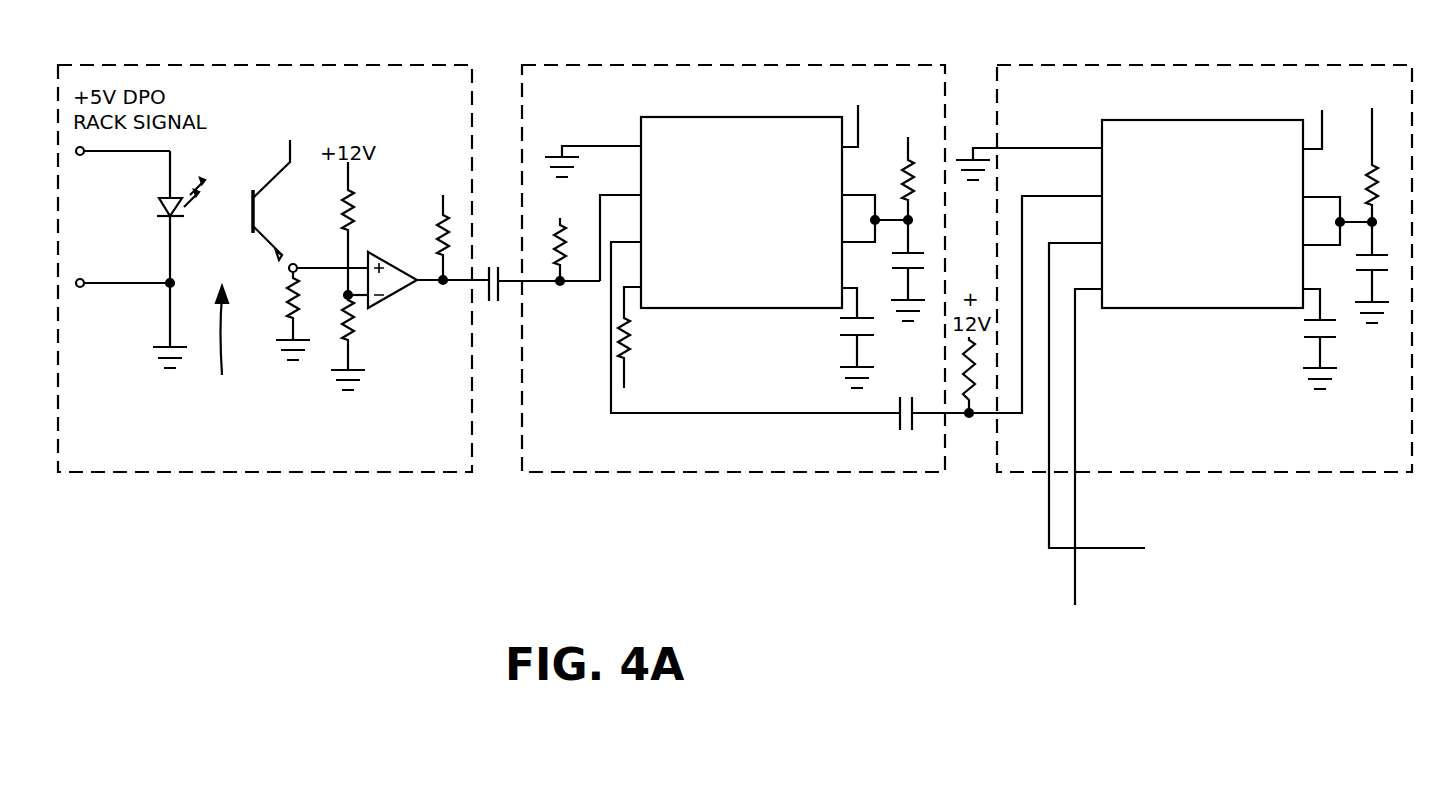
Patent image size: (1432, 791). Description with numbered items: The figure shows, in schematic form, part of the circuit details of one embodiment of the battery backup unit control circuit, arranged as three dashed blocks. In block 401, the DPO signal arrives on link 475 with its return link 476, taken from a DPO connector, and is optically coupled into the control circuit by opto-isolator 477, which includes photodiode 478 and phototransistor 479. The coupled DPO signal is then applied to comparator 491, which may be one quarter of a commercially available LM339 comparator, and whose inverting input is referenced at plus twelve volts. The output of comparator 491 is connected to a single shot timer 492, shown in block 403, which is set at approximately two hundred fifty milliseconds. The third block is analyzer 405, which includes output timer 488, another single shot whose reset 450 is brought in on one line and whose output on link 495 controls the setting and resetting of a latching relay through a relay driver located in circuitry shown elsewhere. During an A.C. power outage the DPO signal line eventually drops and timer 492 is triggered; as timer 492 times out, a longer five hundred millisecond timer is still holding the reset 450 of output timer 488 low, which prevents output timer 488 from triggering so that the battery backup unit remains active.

The block 401 is at (330, 473).
The block 403 is at (800, 473).
The analyzer 405 is at (1258, 475).
The link 475 is at (134, 153).
The return link 476 is at (152, 283).
The opto-isolator 477 is at (221, 346).
The photodiode 478 is at (157, 201).
The phototransistor 479 is at (283, 180).
The comparator 491 is at (397, 296).
The timer 492 is at (757, 117).
The output timer 488 is at (1202, 120).
The reset 450 is at (1077, 436).
The link 495 is at (1048, 512).